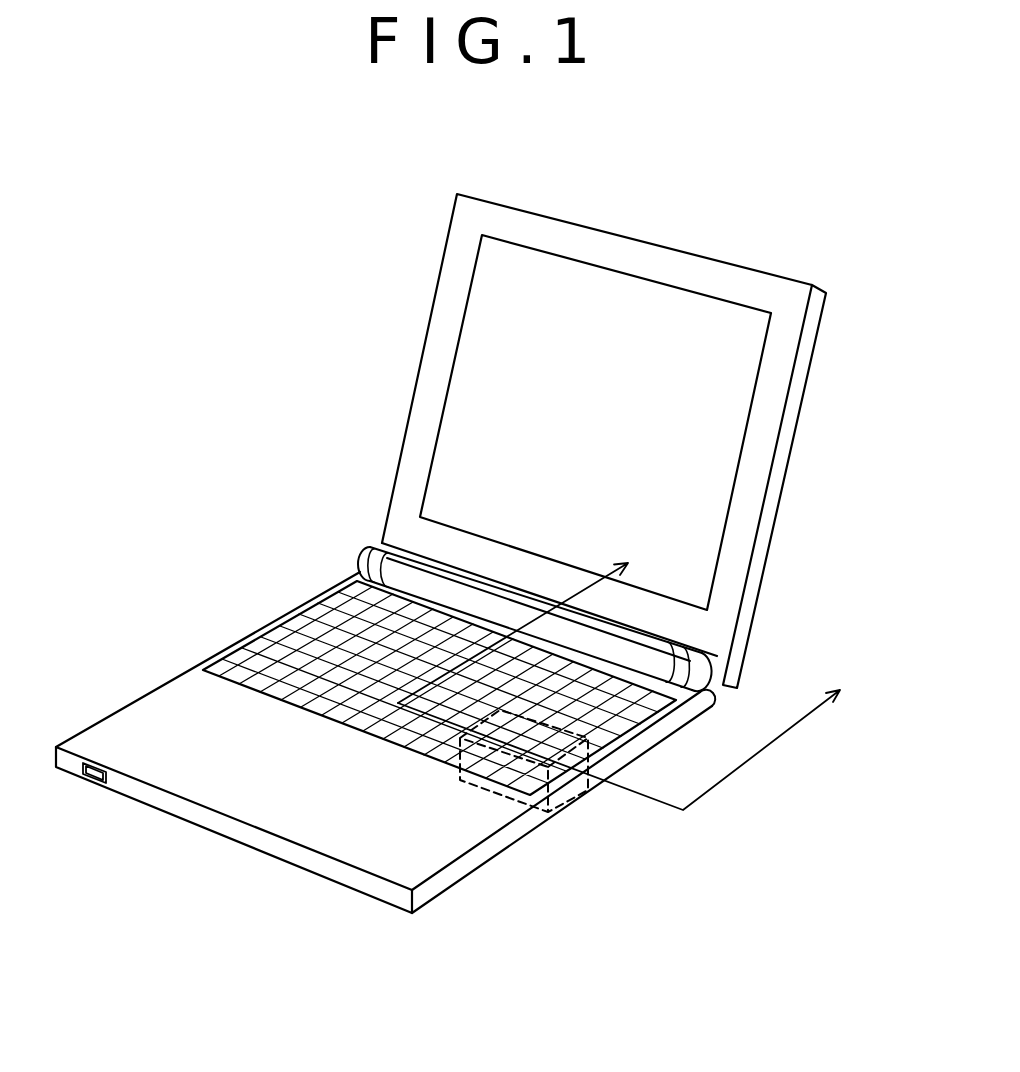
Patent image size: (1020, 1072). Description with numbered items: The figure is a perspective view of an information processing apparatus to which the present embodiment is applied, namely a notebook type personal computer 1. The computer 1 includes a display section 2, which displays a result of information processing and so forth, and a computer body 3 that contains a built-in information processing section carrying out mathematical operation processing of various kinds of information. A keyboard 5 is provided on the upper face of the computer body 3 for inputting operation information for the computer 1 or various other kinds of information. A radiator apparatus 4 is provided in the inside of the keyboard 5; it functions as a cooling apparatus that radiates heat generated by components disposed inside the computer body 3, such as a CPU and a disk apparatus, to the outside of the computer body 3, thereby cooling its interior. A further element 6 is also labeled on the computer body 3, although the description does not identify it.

The computer 1 is at (800, 625).
The display section 2 is at (462, 381).
The computer body 3 is at (470, 827).
The radiator apparatus 4 is at (590, 785).
The keyboard 5 is at (301, 625).
The connector port 6 is at (144, 792).